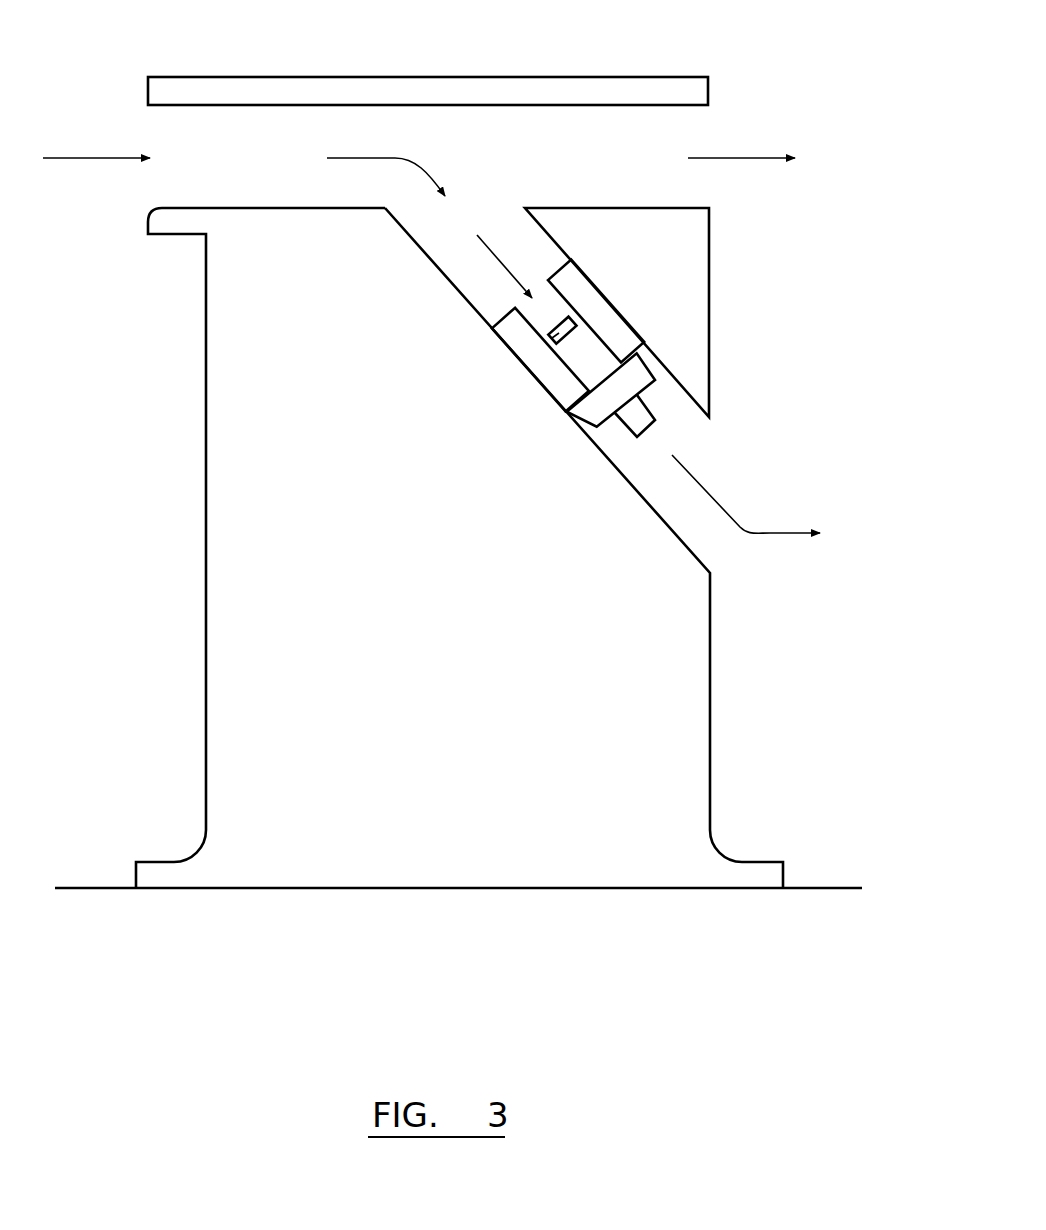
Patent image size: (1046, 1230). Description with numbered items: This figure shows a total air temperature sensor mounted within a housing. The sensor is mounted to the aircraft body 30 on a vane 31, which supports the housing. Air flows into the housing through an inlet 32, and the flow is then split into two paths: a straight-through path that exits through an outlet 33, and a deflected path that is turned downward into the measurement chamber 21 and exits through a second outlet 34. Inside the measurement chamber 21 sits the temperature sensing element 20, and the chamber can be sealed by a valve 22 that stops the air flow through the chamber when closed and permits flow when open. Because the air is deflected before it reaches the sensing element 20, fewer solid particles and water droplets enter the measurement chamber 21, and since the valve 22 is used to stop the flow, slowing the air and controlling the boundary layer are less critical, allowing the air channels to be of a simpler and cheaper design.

The temperature sensing element 20 is at (552, 342).
The measurement chamber 21 is at (590, 363).
The valve 22 is at (634, 376).
The aircraft body 30 is at (463, 889).
The vane 31 is at (258, 582).
The inlet 32 is at (152, 133).
The outlet 33 is at (703, 133).
The outlet 34 is at (683, 435).